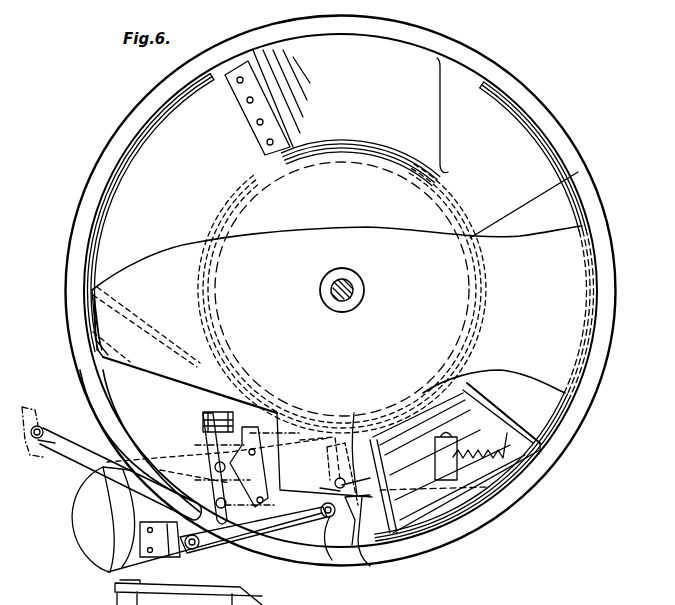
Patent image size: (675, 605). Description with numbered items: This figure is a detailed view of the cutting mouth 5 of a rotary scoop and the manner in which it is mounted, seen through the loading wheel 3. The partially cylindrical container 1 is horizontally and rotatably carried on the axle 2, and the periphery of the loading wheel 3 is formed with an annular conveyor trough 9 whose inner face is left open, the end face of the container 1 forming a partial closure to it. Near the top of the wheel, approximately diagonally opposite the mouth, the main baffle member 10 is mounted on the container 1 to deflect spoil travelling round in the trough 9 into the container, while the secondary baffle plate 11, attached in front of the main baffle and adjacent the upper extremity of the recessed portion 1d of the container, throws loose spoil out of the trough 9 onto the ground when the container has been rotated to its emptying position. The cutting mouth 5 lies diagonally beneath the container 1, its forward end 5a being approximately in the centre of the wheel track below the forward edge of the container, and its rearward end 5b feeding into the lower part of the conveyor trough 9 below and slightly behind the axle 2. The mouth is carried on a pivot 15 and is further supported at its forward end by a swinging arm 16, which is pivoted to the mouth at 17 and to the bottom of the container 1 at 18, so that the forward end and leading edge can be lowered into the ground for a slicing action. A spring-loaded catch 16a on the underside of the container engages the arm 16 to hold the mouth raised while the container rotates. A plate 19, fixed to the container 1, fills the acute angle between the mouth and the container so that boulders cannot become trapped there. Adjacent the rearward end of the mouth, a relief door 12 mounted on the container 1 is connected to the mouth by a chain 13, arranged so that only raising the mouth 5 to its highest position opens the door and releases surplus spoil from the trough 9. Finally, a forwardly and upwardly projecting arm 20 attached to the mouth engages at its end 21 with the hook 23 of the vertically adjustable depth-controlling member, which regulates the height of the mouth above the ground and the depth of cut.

The container 1 is at (540, 272).
The recessed portion 1d is at (196, 390).
The axle 2 is at (353, 290).
The loading wheel 3 is at (585, 180).
The cutting mouth 5 is at (190, 468).
The forward end 5a is at (115, 535).
The rearward end 5b is at (350, 548).
The annular conveyor trough 9 is at (530, 182).
The main baffle member 10 is at (385, 124).
The secondary baffle plate 11 is at (155, 320).
The relief door 12 is at (472, 386).
The chain 13 is at (330, 490).
The pivot 15 is at (355, 444).
The swinging arm 16 is at (240, 500).
The catch 16a is at (236, 428).
The pivot 17 is at (197, 550).
The pivot 18 is at (332, 560).
The plate 19 is at (370, 566).
The arm 20 is at (80, 446).
The end of the arm 21 is at (42, 427).
The hook 23 is at (37, 455).